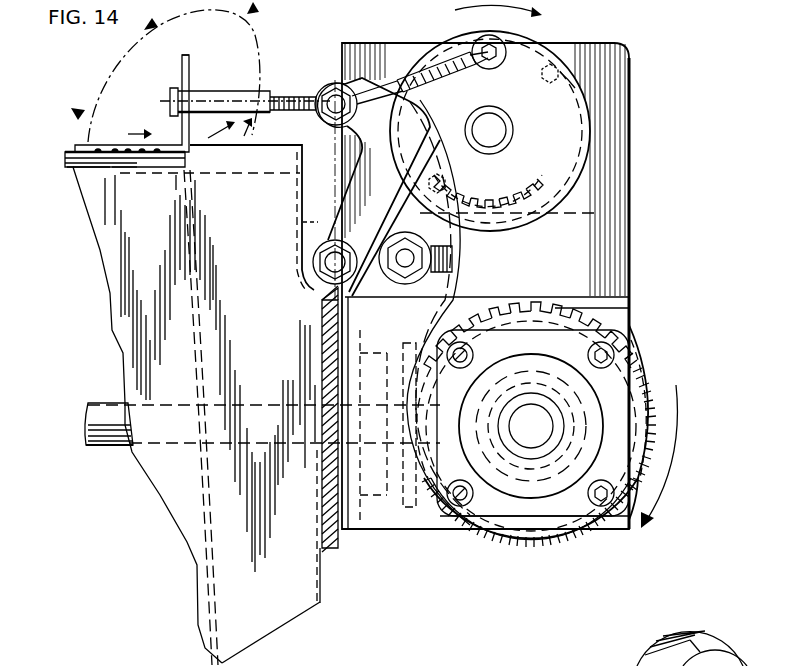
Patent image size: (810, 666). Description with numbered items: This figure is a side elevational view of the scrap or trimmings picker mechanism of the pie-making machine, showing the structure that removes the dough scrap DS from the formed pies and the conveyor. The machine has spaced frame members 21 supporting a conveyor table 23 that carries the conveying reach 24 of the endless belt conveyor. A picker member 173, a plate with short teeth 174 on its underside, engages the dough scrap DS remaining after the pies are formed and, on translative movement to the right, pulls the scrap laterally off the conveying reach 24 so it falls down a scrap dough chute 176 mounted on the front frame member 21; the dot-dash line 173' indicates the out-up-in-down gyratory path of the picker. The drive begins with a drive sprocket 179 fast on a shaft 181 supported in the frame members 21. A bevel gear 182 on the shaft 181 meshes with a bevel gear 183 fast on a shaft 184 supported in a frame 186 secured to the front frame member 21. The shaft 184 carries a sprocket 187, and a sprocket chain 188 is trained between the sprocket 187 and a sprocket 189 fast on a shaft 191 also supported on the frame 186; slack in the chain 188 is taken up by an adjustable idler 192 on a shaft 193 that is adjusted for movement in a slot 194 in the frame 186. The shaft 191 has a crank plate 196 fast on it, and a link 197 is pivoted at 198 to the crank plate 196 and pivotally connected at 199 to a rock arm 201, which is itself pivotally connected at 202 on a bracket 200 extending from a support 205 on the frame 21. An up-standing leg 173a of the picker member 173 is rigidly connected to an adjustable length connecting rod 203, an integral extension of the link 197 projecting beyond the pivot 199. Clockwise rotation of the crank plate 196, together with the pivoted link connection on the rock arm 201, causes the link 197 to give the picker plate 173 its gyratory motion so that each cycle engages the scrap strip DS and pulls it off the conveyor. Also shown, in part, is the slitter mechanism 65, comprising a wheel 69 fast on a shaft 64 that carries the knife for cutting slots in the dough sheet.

The picker member 173 is at (106, 103).
The path of movement 173' is at (165, 72).
The up-standing leg 173a is at (191, 62).
The adjustable length connecting rod 203 is at (204, 96).
The dough scrap DS is at (65, 156).
The short teeth 174 is at (112, 168).
The conveyor table 23 is at (130, 168).
The conveying reach 24 is at (72, 182).
The frame members 21 is at (305, 202).
The rock arm 201 is at (305, 220).
The pivot 202 is at (308, 288).
The bracket 200 is at (305, 313).
The support 205 is at (315, 327).
The scrap dough chute 176 is at (212, 352).
The shaft 181 is at (99, 446).
The pivot 199 is at (334, 86).
The link 197 is at (386, 80).
The pivot 198 is at (352, 92).
The crank plate 196 is at (565, 72).
The shaft 191 is at (499, 140).
The sprocket 189 is at (516, 205).
The frame 186 is at (620, 210).
The sprocket chain 188 is at (622, 284).
The shaft 193 is at (414, 257).
The slot 194 is at (448, 280).
The adjustable idler 192 is at (438, 300).
The sprocket 187 is at (598, 337).
The shaft 184 is at (545, 432).
The bevel gear 183 is at (545, 552).
The bevel gear 182 is at (474, 548).
The drive sprocket 179 is at (410, 510).
The slitter mechanism 65 is at (628, 652).
The wheel 69 is at (704, 652).
The shaft 64 is at (738, 663).